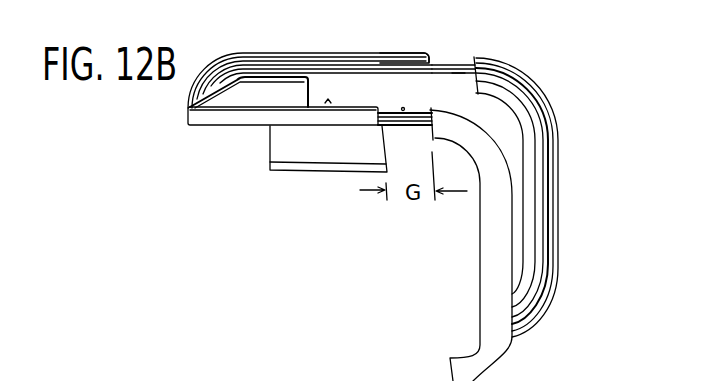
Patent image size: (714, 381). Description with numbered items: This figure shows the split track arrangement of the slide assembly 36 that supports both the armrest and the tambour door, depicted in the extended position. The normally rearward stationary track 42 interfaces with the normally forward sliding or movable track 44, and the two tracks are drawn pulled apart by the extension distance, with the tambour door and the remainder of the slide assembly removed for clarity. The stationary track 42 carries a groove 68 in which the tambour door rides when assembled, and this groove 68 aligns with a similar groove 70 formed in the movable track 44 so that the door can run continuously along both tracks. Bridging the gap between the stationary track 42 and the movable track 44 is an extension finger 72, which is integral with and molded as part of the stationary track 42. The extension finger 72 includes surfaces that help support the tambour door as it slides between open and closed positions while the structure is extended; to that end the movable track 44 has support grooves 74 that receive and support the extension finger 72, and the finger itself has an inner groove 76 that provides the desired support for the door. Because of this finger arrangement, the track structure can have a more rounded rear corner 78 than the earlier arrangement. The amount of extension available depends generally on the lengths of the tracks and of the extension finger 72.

The slide assembly 36 is at (392, 289).
The stationary track 42 is at (559, 228).
The sliding or movable track 44 is at (203, 120).
The groove 68 is at (525, 86).
The groove 70 is at (335, 53).
The extension finger 72 is at (448, 64).
The support grooves 74 is at (429, 53).
The inner groove 76 is at (458, 74).
The rounded rear corner 78 is at (513, 68).